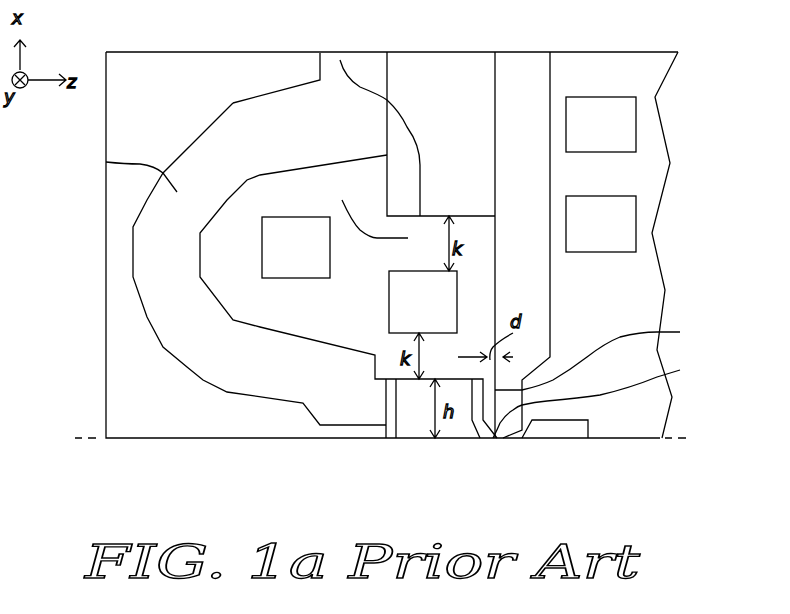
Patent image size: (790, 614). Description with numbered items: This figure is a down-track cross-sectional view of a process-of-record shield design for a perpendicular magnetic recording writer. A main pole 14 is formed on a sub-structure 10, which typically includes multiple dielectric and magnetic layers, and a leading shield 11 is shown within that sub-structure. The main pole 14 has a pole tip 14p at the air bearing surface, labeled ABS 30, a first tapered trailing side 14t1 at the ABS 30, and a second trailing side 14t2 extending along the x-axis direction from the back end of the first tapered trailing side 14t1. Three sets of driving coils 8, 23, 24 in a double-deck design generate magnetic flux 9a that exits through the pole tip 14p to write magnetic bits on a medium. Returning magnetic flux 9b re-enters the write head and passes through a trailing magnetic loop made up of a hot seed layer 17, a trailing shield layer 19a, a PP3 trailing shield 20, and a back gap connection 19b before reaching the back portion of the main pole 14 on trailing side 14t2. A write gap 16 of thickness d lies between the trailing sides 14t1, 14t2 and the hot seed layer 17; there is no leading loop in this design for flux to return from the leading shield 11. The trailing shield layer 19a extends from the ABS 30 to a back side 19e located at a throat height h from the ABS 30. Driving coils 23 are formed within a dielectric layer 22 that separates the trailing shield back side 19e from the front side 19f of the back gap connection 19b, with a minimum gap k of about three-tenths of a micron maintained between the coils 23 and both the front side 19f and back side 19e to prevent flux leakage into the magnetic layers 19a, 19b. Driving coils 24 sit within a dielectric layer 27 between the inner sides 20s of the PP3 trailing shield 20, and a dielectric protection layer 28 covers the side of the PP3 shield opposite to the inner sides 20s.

The protection layer 28 is at (172, 77).
The inner sides of the PP3 trailing shield 20s is at (285, 171).
The dielectric layer 22 is at (342, 200).
The front side of the BGC 19f is at (340, 60).
The back gap connection (BGC) 19b is at (413, 73).
The second trailing side 14t2 is at (495, 78).
The main pole 14 is at (537, 68).
The driving coils 8 is at (620, 120).
The magnetic flux 9a is at (526, 214).
The PP3 trailing shield 20 is at (106, 162).
The magnetic flux 9b is at (251, 158).
The driving coils 24 is at (273, 247).
The dielectric layer 27 is at (237, 273).
The driving coils 23 is at (402, 306).
The ABS 30 is at (379, 439).
The back side of trailing shield layer 19e is at (393, 433).
The trailing shield layer 19a is at (402, 420).
The hot seed layer 17 is at (470, 407).
The pole tip 14p is at (507, 440).
The leading shield 11 is at (560, 427).
The sub-structure 10 is at (628, 428).
The write gap 16 is at (603, 355).
The first tapered trailing side 14t1 is at (614, 399).